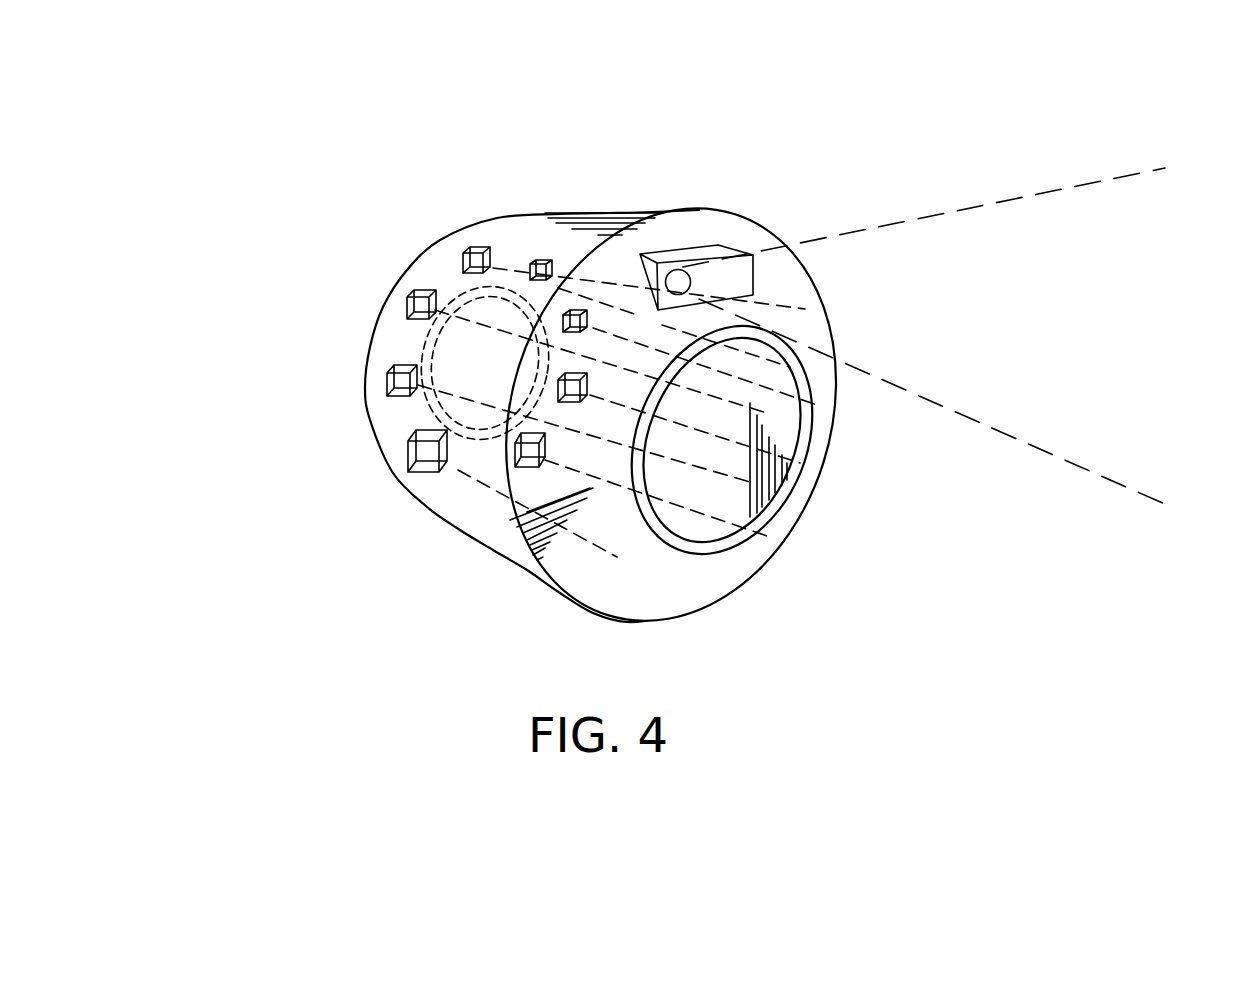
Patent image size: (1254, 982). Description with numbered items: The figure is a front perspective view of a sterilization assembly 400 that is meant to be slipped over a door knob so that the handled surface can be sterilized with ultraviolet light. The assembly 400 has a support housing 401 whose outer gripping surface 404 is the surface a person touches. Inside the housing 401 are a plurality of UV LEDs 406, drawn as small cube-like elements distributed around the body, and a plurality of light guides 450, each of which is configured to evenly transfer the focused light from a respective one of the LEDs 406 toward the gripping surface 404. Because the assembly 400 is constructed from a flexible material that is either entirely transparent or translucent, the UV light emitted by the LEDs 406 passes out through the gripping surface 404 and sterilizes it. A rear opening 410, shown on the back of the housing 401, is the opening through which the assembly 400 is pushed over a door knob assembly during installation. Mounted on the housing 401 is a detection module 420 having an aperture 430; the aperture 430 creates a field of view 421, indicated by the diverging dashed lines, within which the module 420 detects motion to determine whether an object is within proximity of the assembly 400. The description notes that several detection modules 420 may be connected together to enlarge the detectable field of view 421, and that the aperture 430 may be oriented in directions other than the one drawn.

The sterilization assembly 400 is at (215, 122).
The support housing 401 is at (705, 619).
The gripping surface 404 is at (615, 218).
The UV LEDs 406 is at (467, 247).
The rear opening 410 is at (465, 364).
The detection module 420 is at (740, 240).
The field of view 421 is at (1007, 440).
The aperture 430 is at (712, 282).
The light guides 450 is at (760, 537).